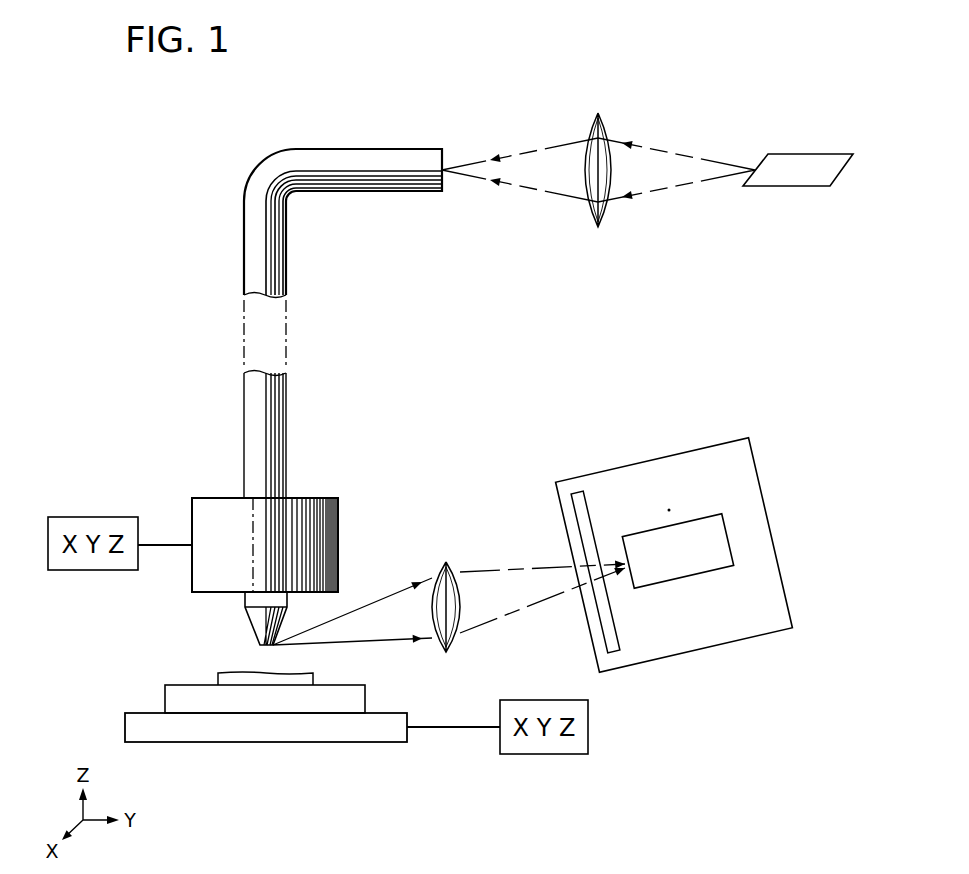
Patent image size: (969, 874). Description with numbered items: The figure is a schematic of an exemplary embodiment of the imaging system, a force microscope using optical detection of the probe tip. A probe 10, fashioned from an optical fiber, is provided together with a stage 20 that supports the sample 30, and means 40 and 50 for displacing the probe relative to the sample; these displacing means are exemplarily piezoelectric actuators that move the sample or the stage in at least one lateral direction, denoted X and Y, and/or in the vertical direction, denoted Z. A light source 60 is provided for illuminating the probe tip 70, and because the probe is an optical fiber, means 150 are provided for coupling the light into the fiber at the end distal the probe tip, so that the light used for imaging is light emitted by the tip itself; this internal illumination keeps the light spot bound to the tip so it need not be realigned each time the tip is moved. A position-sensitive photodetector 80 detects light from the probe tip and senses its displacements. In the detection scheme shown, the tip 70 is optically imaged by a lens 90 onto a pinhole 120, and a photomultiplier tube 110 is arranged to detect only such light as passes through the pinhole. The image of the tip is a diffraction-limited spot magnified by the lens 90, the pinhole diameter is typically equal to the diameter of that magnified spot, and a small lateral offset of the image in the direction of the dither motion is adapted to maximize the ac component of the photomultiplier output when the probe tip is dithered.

The probe 10 is at (287, 396).
The stage 20 is at (366, 697).
The sample 30 is at (218, 677).
The means for displacing the probe relative to the sample 40 is at (339, 512).
The means for displacing the probe relative to the sample 50 is at (407, 737).
The light source 60 is at (805, 155).
The probe tip 70 is at (245, 620).
The position-sensitive photodetector 80 is at (655, 460).
The lens 90 is at (445, 567).
The photomultiplier tube 110 is at (692, 517).
The pinhole 120 is at (585, 580).
The means for coupling the light into the fiber 150 is at (600, 126).